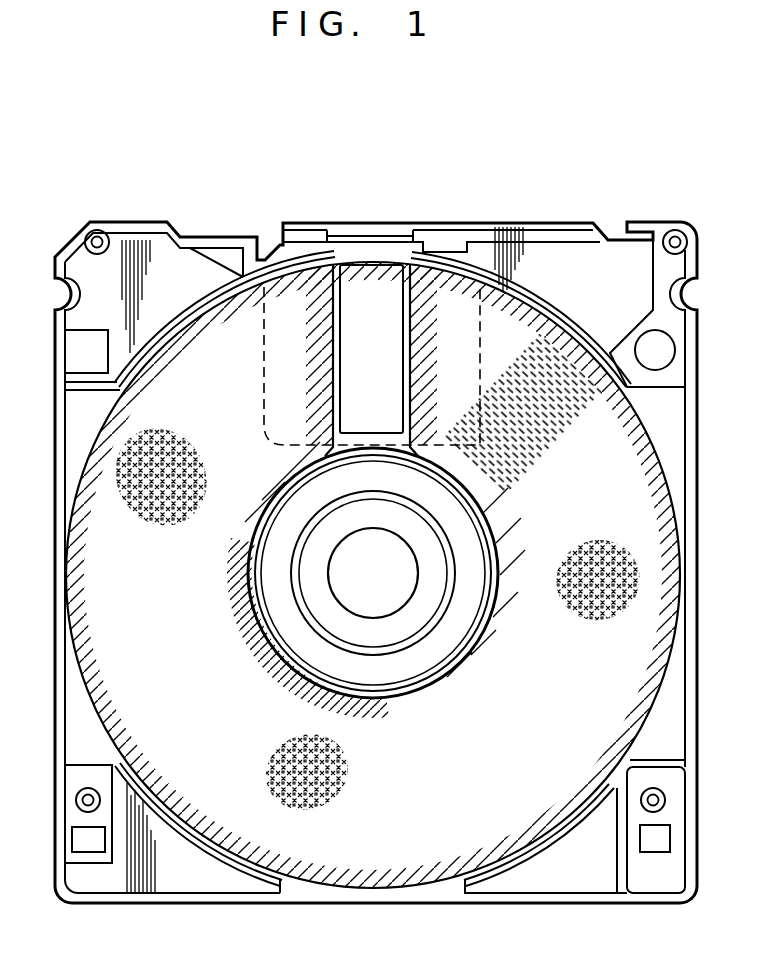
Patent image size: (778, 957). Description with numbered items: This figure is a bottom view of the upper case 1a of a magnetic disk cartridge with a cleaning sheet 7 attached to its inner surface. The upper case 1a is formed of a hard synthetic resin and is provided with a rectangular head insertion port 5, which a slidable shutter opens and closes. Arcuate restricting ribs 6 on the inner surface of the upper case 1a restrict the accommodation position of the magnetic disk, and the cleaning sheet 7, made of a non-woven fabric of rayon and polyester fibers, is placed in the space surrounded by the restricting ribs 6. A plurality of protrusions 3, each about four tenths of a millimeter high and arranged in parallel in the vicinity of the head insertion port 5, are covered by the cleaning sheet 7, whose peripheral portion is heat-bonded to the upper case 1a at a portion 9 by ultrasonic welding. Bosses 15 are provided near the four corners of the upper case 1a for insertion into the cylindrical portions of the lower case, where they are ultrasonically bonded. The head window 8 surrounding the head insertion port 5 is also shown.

The upper case 1a is at (540, 237).
The protrusions 3 is at (548, 452).
The head insertion port 5 is at (403, 294).
The arcuate restricting ribs 6 is at (188, 306).
The cleaning sheet 7 is at (135, 477).
The head window 8 is at (337, 300).
The heat-bonded portion 9 is at (662, 470).
The bosses 15 is at (97, 230).